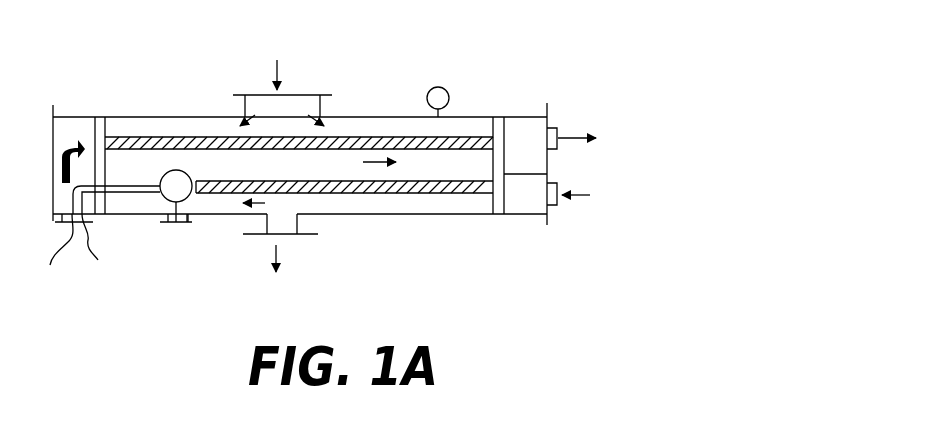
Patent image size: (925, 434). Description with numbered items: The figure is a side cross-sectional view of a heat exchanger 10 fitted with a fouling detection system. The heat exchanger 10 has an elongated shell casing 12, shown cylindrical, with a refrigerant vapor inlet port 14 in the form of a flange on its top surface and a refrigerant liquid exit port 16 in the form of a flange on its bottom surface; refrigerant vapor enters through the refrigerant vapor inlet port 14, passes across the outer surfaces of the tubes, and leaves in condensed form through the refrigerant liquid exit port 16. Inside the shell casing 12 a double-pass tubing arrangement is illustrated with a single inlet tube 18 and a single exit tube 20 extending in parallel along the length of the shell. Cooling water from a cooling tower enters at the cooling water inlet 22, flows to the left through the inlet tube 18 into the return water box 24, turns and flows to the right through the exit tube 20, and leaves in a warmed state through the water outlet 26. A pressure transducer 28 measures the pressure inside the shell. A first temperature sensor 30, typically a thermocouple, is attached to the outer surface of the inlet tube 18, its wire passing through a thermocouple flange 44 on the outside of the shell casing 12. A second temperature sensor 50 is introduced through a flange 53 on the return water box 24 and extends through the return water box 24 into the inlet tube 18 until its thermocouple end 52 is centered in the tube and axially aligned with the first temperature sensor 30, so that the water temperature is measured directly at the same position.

The heat exchanger 10 is at (365, 58).
The shell casing 12 is at (165, 117).
The refrigerant vapor inlet port 14 is at (308, 100).
The refrigerant liquid exit port 16 is at (288, 228).
The inlet tube 18 is at (358, 193).
The exit tube 20 is at (352, 137).
The cooling water inlet 22 is at (530, 210).
The return water box 24 is at (70, 125).
The water outlet 26 is at (528, 130).
The pressure transducer 28 is at (435, 90).
The first temperature sensor 30 is at (188, 216).
The thermocouple flange 44 is at (176, 204).
The second temperature sensor 50 is at (128, 194).
The thermocouple end 52 is at (176, 170).
The flange 53 is at (63, 229).